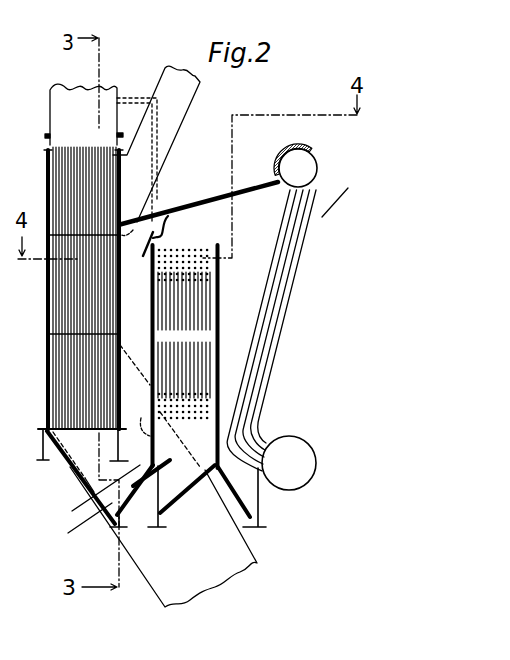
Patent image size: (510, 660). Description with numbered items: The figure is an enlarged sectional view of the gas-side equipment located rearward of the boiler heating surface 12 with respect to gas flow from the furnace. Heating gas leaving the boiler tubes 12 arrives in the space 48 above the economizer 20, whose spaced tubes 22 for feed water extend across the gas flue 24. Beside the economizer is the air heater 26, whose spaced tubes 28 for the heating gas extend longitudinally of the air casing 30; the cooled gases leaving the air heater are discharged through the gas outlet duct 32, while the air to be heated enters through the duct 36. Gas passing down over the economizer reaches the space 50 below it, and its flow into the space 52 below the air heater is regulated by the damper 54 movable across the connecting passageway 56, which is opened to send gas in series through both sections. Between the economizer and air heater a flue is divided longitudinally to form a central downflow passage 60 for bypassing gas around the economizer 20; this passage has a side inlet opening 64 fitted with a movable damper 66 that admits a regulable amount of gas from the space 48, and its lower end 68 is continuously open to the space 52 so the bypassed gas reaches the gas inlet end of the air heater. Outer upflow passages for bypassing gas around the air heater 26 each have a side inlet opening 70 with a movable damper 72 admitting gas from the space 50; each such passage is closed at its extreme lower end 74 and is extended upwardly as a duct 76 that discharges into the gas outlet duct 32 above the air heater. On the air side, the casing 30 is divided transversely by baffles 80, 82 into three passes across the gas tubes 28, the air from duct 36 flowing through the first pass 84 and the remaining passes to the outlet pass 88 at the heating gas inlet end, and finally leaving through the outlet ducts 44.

The boiler heating surface 12 is at (292, 277).
The economizer 20 is at (202, 307).
The spaced tubes 22 is at (200, 280).
The gas flue 24 is at (210, 355).
The air heater 26 is at (47, 268).
The spaced tubes 28 is at (57, 352).
The air casing 30 is at (47, 398).
The gas outlet duct 32 is at (50, 107).
The duct 36 is at (182, 125).
The outlet ducts 44 is at (150, 593).
The space 48 is at (218, 233).
The space 50 is at (200, 437).
The space 52 is at (92, 454).
The damper 54 is at (173, 500).
The connecting passageway 56 is at (107, 505).
The central downflow passage 60 is at (146, 327).
The side inlet opening 64 is at (135, 254).
The movable damper 66 is at (168, 222).
The lower end 68 is at (96, 495).
The side inlet opening 70 is at (140, 417).
The movable damper 72 is at (180, 439).
The extreme lower end 74 is at (128, 470).
The duct 76 is at (162, 148).
The baffle 80 is at (68, 233).
The baffle 82 is at (63, 327).
The pass 84 is at (84, 191).
The pass 88 is at (84, 332).